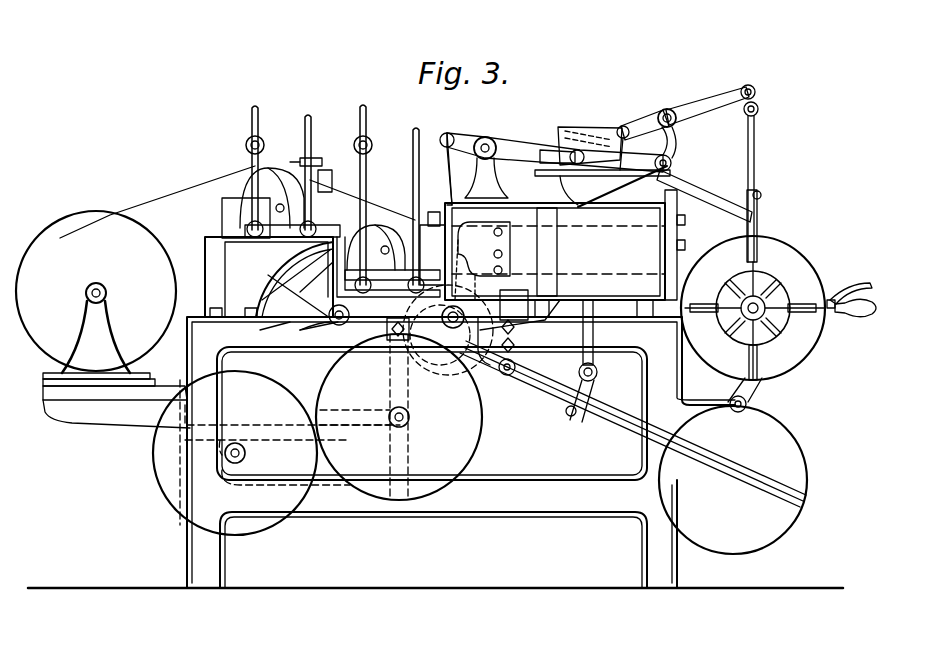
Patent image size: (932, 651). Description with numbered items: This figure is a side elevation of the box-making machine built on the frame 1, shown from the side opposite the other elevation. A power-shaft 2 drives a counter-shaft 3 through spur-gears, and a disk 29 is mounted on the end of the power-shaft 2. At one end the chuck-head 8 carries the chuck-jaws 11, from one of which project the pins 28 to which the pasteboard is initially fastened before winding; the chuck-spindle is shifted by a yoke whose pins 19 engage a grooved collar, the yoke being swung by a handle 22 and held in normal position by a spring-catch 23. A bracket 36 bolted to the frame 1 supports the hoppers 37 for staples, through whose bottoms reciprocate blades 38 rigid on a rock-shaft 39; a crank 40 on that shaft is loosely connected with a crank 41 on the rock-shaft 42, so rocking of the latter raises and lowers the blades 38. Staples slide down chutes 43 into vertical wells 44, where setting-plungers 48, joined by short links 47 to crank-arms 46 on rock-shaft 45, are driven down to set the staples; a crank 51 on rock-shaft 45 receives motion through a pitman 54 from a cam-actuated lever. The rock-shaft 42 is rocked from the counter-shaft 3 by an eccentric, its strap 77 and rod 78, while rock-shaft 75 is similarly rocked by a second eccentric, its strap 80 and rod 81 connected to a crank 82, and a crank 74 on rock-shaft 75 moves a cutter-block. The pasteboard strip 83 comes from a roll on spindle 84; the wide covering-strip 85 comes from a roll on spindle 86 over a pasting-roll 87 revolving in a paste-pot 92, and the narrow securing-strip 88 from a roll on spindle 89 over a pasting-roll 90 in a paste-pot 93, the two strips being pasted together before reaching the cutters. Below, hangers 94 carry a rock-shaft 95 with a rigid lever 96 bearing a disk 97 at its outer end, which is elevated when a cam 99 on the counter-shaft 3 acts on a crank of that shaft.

The frame 1 is at (461, 452).
The power-shaft 2 is at (313, 333).
The counter-shaft 3 is at (448, 330).
The chuck-head 8 is at (753, 301).
The chuck-jaws 11 is at (754, 307).
The pins 19 is at (769, 182).
The handle 22 is at (878, 309).
The spring-catch 23 is at (858, 284).
The pins 28 is at (760, 266).
The disk 29 is at (272, 332).
The bracket 36 is at (680, 208).
The hoppers 37 is at (590, 130).
The blades 38 is at (602, 177).
The rock-shaft 39 is at (672, 162).
The crank 40 is at (623, 126).
The crank 41 is at (519, 144).
The rock-shaft 42 is at (487, 137).
The chutes 43 is at (720, 180).
The wells 44 is at (758, 204).
The rock-shaft 45 is at (672, 110).
The crank-arms 46 is at (727, 95).
The links 47 is at (757, 95).
The setting-plungers 48 is at (757, 130).
The crank 51 is at (645, 117).
The pitman 54 is at (628, 196).
The crank 74 is at (593, 328).
The rock-shaft 75 is at (596, 380).
The strap 77 is at (540, 304).
The rod 78 is at (449, 160).
The strap 80 is at (396, 319).
The rod 81 is at (532, 390).
The crank 82 is at (579, 373).
The pasteboard strip 83 is at (390, 342).
The spindle 84 is at (410, 418).
The covering-strip 85 is at (175, 194).
The spindle 86 is at (96, 290).
The pasting-roll 87 is at (255, 170).
The securing-strip 88 is at (318, 283).
The spindle 89 is at (245, 453).
The pasting-roll 90 is at (385, 238).
The paste-pot 92 is at (224, 204).
The paste-pot 93 is at (388, 267).
The hangers 94 is at (551, 320).
The rock-shaft 95 is at (505, 373).
The lever 96 is at (595, 416).
The disk 97 is at (733, 480).
The cam 99 is at (482, 261).